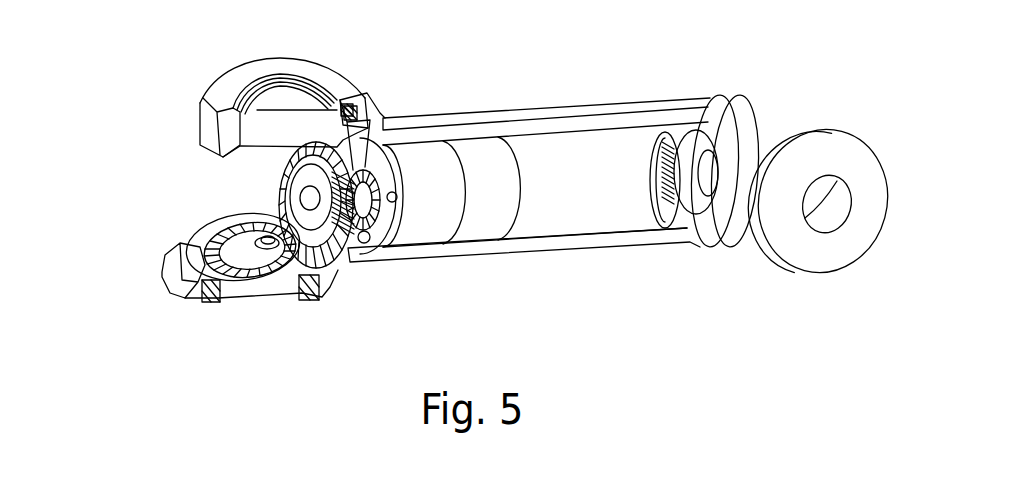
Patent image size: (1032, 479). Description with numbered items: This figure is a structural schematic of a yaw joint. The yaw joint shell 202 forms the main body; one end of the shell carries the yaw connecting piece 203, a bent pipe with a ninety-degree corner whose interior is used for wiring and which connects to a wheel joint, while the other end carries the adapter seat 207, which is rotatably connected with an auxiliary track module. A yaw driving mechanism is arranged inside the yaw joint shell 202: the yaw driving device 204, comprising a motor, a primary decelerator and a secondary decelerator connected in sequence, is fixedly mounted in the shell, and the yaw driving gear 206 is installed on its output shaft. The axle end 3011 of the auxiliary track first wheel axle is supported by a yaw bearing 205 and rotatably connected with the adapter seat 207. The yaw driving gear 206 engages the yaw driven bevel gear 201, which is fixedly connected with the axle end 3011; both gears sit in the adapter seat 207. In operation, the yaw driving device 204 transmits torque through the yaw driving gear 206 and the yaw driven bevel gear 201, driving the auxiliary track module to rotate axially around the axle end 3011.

The yaw driven bevel gear 201 is at (313, 283).
The yaw joint shell 202 is at (580, 243).
The yaw connecting piece 203 is at (800, 144).
The yaw driving device 204 is at (610, 163).
The yaw bearing 205 is at (307, 70).
The yaw driving gear 206 is at (280, 192).
The adapter seat 207 is at (218, 95).
The axle end 3011 is at (195, 233).